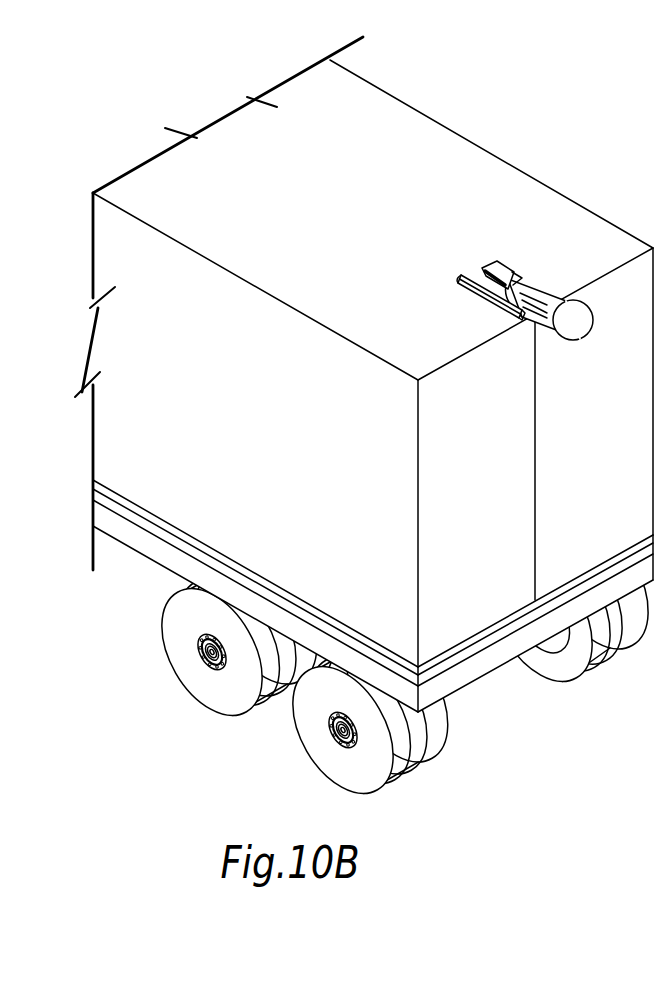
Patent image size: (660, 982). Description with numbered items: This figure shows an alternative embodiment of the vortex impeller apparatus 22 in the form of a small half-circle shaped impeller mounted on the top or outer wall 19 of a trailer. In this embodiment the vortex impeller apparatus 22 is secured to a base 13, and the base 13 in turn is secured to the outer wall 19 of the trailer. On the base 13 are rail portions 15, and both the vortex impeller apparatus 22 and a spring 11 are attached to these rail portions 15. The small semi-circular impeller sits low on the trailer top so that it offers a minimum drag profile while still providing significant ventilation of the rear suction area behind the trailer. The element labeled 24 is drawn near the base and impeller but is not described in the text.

The spring 11 is at (478, 284).
The base 13 is at (490, 268).
The rail portions 15 is at (500, 262).
The outer wall 19 is at (302, 206).
The vortex impeller apparatus 22 is at (585, 318).
The pivot mount 24 is at (508, 275).